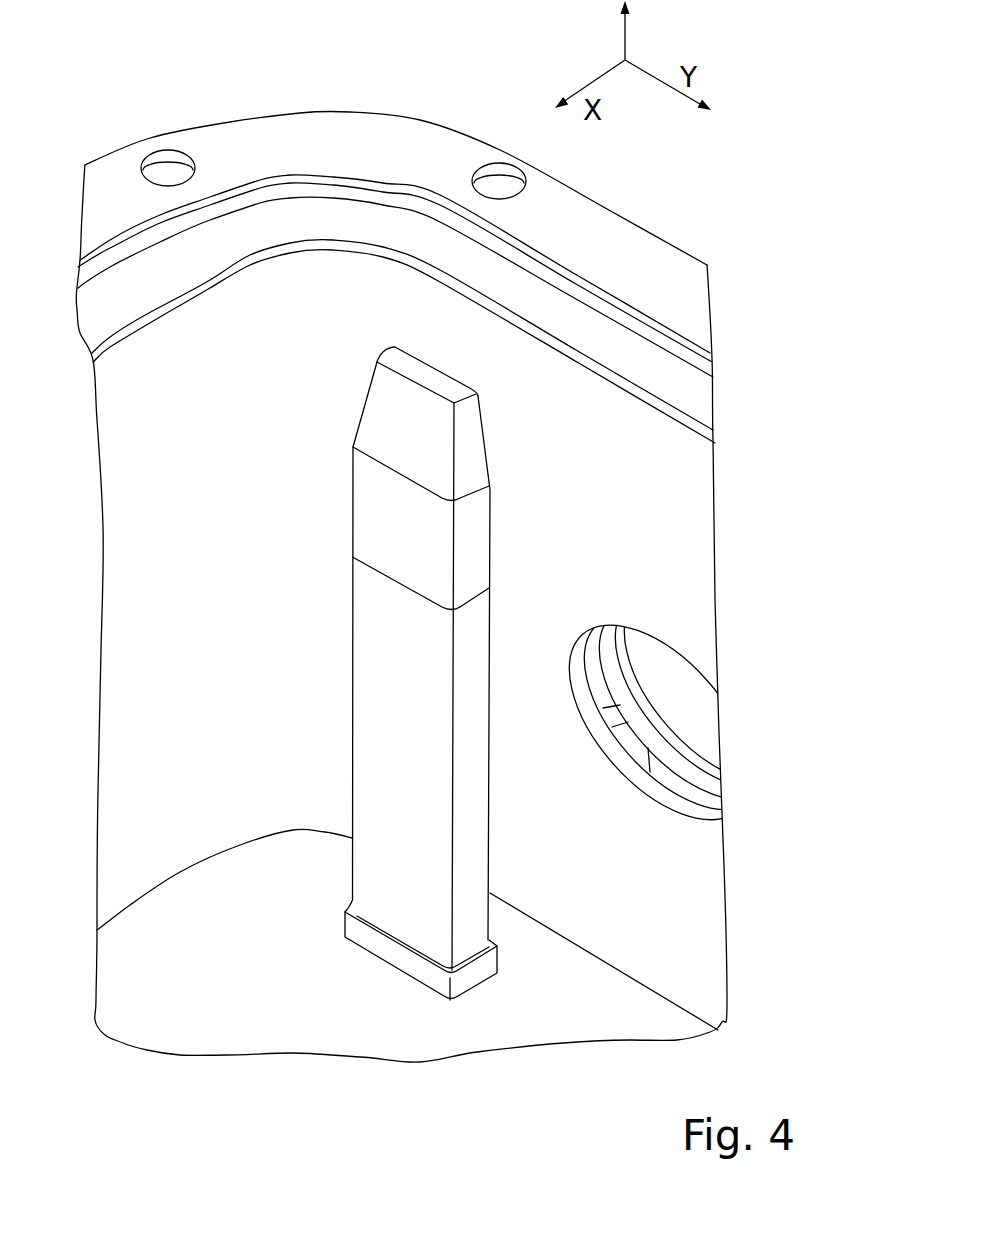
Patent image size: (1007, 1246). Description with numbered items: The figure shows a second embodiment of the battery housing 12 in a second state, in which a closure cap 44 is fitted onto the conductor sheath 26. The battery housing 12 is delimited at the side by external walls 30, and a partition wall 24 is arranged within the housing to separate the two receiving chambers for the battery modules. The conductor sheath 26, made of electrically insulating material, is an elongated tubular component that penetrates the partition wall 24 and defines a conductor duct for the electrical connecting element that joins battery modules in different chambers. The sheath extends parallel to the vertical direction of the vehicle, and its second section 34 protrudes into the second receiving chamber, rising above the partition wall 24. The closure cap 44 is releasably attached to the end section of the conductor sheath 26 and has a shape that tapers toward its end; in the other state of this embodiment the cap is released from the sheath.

The battery housing 12 is at (140, 112).
The partition wall 24 is at (557, 1000).
The conductor sheath 26 is at (500, 810).
The external wall 30 is at (302, 190).
The second section 34 is at (415, 915).
The closure cap 44 is at (437, 455).